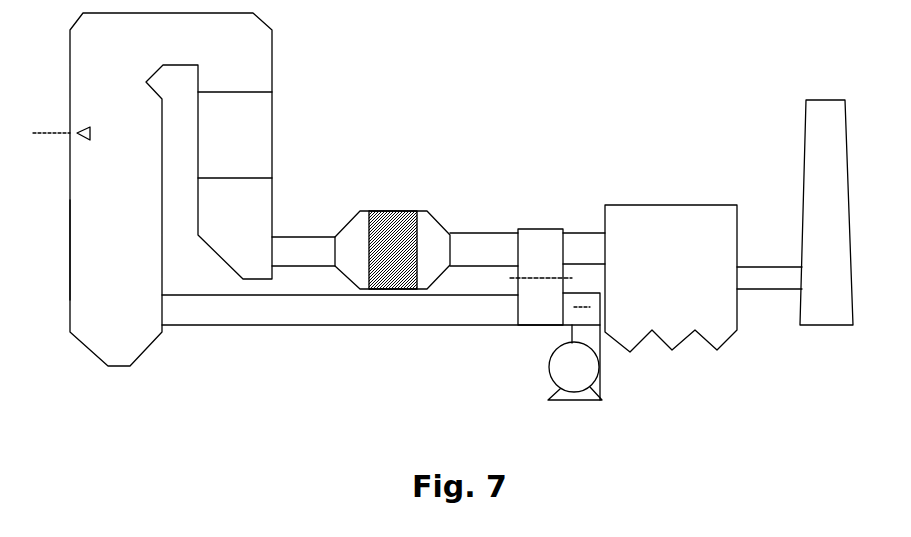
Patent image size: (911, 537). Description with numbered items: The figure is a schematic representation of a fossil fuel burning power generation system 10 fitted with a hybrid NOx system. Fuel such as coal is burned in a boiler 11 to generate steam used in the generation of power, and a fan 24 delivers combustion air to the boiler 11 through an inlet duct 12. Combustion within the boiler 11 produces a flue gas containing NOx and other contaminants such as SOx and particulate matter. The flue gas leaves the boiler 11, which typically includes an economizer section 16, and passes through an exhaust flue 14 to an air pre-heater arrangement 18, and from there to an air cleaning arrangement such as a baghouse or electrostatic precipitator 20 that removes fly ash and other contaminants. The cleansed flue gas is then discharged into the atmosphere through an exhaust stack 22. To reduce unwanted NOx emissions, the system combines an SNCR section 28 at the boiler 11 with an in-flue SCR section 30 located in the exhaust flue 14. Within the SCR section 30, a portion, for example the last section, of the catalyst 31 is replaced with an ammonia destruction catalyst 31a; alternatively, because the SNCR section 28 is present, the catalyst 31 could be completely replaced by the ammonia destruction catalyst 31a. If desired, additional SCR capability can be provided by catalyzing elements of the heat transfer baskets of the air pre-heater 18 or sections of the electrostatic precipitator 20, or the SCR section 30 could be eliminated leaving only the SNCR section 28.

The power generation system 10 is at (77, 368).
The boiler 11 is at (85, 247).
The inlet duct 12 is at (362, 317).
The exhaust flue 14 is at (283, 248).
The economizer section 16 is at (245, 147).
The air pre-heater arrangement 18 is at (535, 313).
The electrostatic precipitator 20 is at (678, 218).
The exhaust stack 22 is at (832, 178).
The fan 24 is at (588, 370).
The SNCR section 28 is at (60, 140).
The in-flue SCR section 30 is at (377, 210).
The catalyst 31 is at (373, 275).
The ammonia destruction catalyst 31a is at (402, 223).